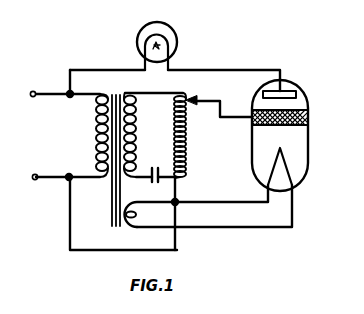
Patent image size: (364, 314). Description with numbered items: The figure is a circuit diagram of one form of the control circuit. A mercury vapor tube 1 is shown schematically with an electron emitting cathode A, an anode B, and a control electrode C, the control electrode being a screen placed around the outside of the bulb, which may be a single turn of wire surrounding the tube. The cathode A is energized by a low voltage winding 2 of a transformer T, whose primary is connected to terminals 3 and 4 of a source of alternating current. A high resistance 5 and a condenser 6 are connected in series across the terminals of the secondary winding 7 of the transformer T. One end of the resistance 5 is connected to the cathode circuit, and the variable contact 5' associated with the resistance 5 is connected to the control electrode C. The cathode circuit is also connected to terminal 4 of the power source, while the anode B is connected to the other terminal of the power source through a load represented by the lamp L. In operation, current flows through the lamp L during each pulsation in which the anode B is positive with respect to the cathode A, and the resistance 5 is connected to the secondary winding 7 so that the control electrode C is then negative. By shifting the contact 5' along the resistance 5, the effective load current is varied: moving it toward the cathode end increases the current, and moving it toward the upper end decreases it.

The mercury vapor tube 1 is at (294, 84).
The low voltage winding 2 is at (140, 216).
The terminal 3 is at (24, 94).
The terminal 4 is at (26, 177).
The high resistance 5 is at (189, 135).
The variable contact 5' is at (201, 92).
The condenser 6 is at (154, 167).
The secondary winding 7 is at (138, 118).
The lamp L is at (171, 33).
The transformer T is at (90, 135).
The cathode A is at (287, 163).
The anode B is at (297, 95).
The control electrode C is at (303, 129).